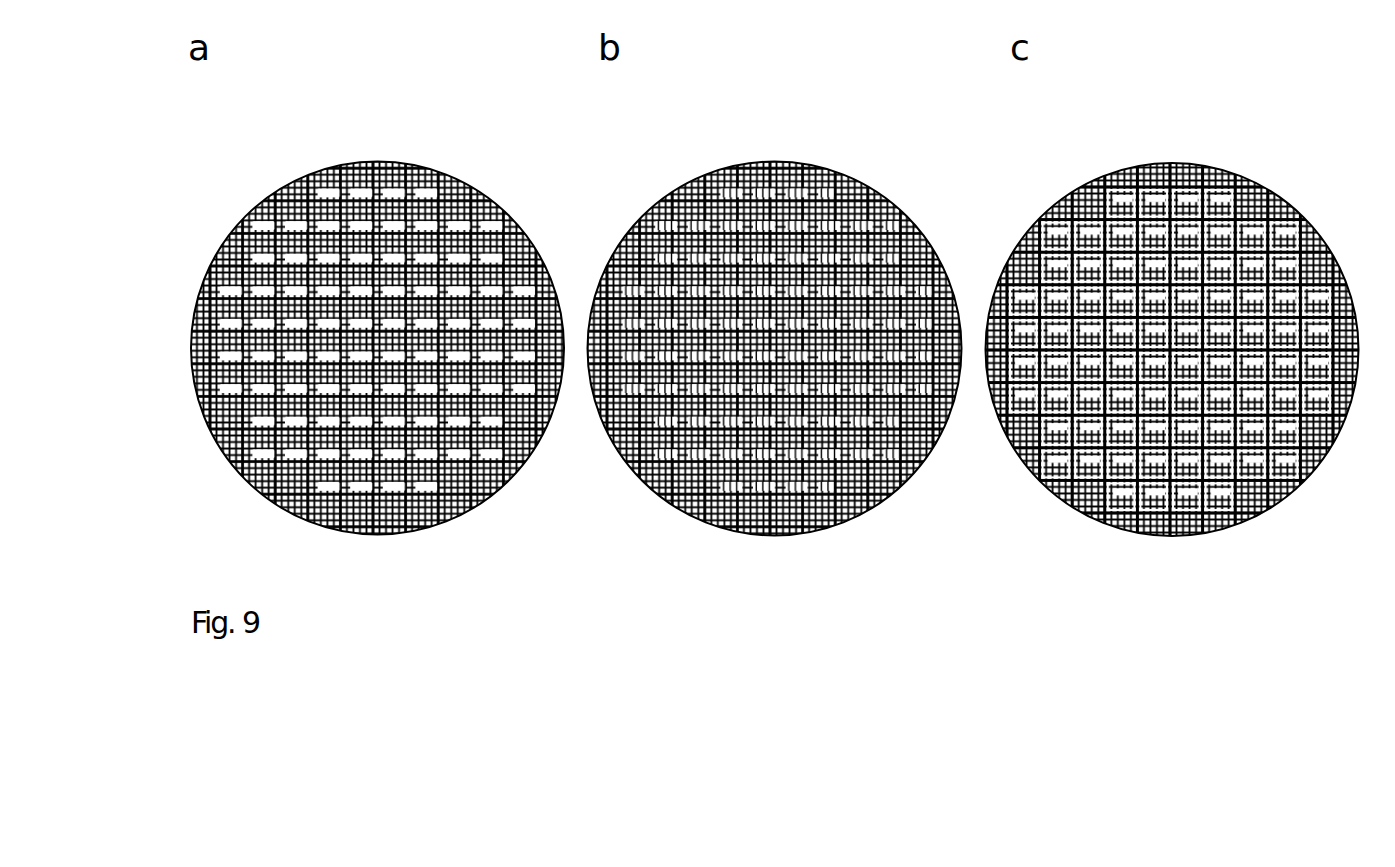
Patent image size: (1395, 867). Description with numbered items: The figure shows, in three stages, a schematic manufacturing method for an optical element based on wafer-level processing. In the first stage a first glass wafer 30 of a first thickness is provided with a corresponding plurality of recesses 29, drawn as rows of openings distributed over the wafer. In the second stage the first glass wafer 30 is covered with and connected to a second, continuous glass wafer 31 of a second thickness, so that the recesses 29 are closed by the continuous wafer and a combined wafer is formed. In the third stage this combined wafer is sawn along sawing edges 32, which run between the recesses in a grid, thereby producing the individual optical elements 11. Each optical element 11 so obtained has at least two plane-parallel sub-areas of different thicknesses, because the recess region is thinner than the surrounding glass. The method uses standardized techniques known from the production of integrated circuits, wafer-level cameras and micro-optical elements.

In FIG. 9a, the first glass wafer 30 is at (273, 172).
In FIG. 9b, the first glass wafer 30 is at (673, 202).
In FIG. 9a, the recesses 29 is at (383, 187).
In FIG. 9b, the second, continuous glass wafer 31 is at (782, 190).
In FIG. 9c, the sawing edges 32 is at (1127, 180).
In FIG. 9c, the optical element 11 is at (1147, 200).